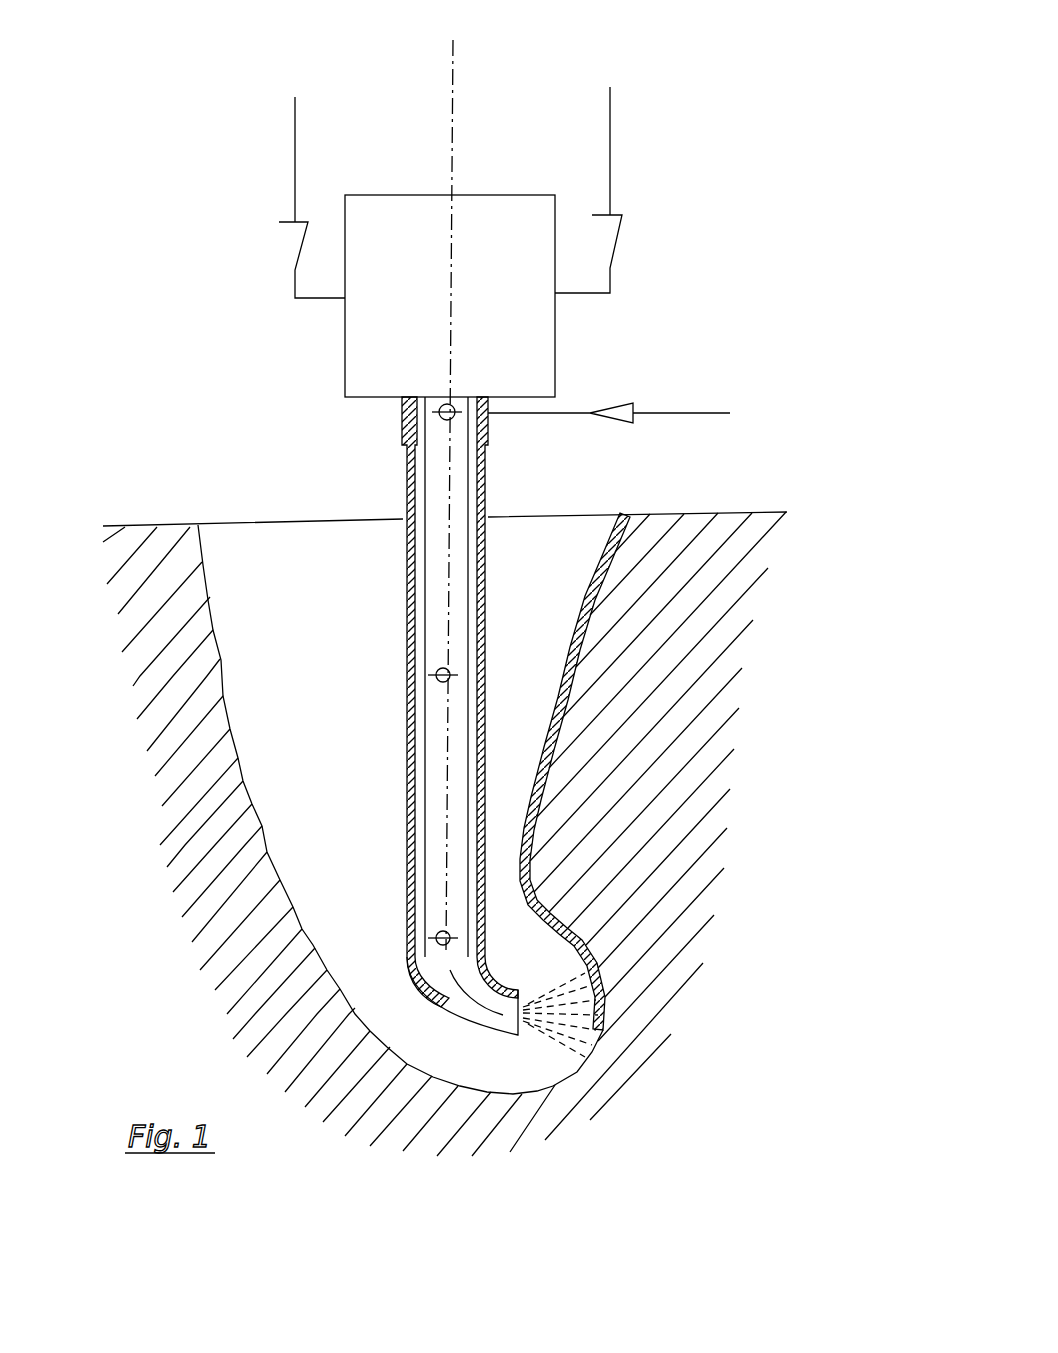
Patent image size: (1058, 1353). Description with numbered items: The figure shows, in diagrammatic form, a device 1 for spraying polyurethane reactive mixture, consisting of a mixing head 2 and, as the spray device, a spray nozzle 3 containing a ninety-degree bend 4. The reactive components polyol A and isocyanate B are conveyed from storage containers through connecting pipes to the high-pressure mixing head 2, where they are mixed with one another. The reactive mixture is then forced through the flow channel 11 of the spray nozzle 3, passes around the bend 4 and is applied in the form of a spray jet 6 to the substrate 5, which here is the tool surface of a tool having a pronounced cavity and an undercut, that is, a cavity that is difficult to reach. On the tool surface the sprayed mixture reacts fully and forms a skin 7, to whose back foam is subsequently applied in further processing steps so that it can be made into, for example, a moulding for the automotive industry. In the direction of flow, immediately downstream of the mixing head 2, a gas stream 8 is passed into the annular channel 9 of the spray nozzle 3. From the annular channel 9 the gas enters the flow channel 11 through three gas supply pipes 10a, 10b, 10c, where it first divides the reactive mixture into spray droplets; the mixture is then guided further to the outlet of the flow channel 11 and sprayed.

The device 1 is at (661, 322).
The mixing head 2 is at (543, 352).
The spray nozzle 3 is at (404, 693).
The 90° bend 4 is at (488, 983).
The substrate 5 is at (537, 1093).
The spray jet 6 is at (603, 1037).
The skin 7 is at (567, 930).
The gas stream 8 is at (689, 417).
The annular channel 9 is at (473, 460).
The gas supply pipe 10a is at (440, 420).
The gas supply pipe 10b is at (449, 670).
The gas supply pipe 10c is at (439, 944).
The flow channel 11 is at (458, 510).